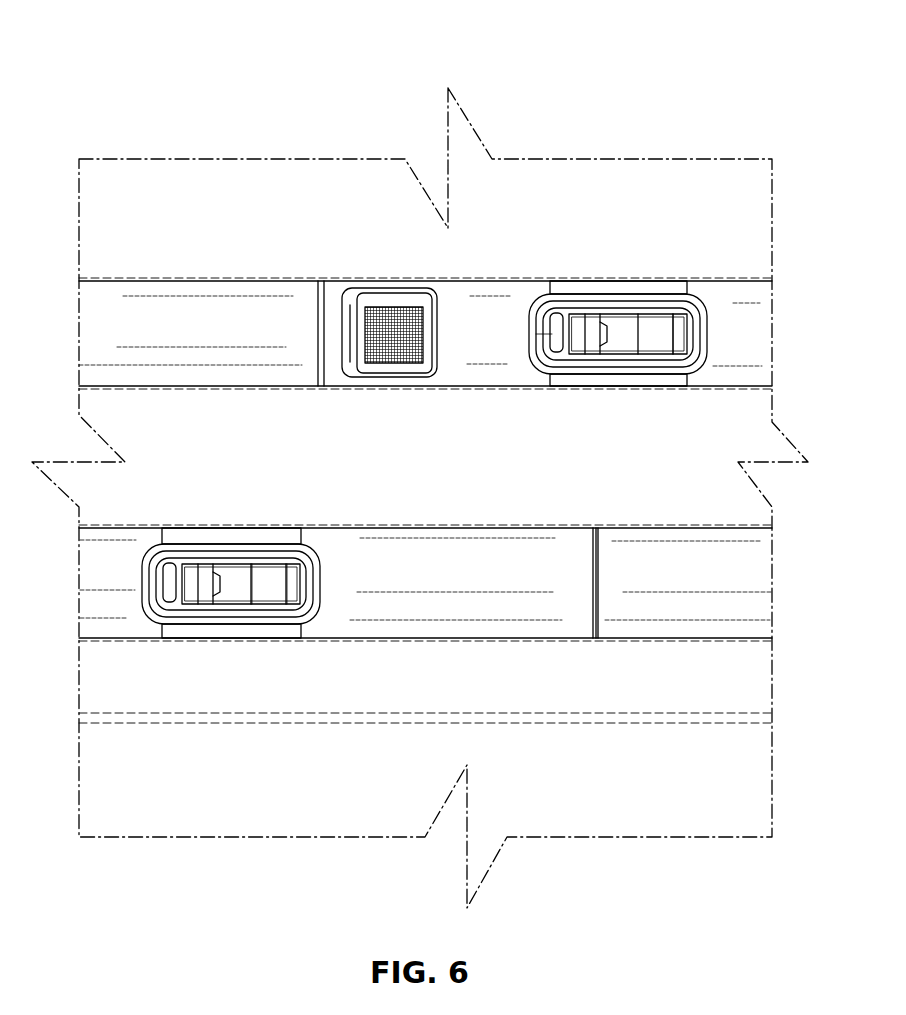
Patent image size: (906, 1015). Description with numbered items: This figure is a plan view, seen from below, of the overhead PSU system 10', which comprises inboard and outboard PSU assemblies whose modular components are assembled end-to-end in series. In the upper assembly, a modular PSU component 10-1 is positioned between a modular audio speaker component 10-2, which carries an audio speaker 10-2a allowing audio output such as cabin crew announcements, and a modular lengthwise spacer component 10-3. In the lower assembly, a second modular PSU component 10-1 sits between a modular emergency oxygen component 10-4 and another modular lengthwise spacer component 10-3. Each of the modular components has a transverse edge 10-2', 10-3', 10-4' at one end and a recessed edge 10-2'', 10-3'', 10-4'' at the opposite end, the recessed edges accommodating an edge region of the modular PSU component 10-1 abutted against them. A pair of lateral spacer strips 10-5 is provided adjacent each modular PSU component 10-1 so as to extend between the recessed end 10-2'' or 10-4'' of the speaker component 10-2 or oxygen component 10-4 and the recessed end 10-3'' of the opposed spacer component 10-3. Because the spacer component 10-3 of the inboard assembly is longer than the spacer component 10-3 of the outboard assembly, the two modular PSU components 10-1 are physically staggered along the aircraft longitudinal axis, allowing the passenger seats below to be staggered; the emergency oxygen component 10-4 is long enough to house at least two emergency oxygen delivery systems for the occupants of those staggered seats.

The PSU system 10' is at (420, 461).
The modular PSU component 10-1 is at (618, 281).
The modular audio speaker component 10-2 is at (503, 288).
The transverse edge 10-2' is at (274, 283).
The recessed edge 10-2'' is at (582, 400).
The audio speaker 10-2a is at (397, 342).
The modular lengthwise spacer component 10-3 is at (452, 489).
The transverse edge 10-3' is at (500, 532).
The recessed edge 10-3'' is at (428, 459).
The modular emergency oxygen component 10-4 is at (456, 579).
The transverse edge 10-4' is at (544, 551).
The recessed edge 10-4'' is at (290, 520).
The lateral spacer strips 10-5 is at (592, 289).